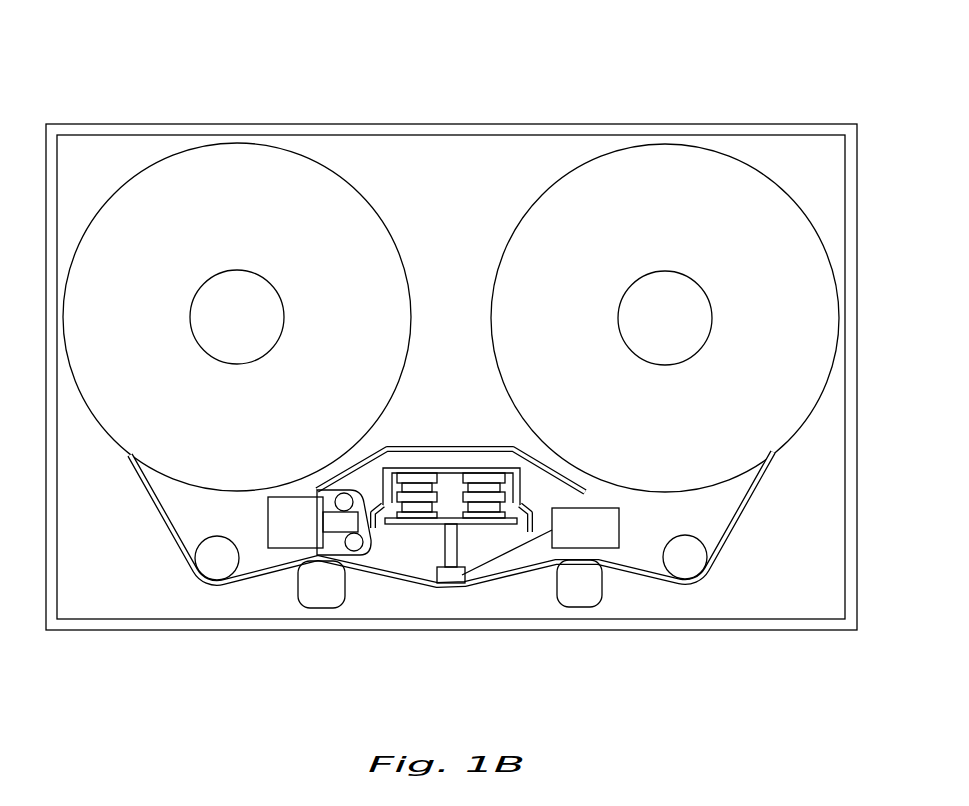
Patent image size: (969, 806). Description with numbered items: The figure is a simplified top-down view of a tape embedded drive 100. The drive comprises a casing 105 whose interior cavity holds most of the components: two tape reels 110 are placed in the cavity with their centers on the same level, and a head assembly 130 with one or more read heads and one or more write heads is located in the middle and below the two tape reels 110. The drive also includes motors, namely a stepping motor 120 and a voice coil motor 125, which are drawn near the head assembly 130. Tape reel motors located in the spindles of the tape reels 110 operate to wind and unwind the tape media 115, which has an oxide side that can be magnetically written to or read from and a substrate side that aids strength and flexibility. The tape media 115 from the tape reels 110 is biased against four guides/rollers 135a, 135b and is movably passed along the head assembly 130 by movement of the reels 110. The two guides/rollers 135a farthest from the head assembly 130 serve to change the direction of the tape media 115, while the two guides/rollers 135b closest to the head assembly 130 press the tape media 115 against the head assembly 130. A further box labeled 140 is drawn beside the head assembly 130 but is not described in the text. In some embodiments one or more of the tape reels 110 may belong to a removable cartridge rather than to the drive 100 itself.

The tape embedded drive 100 is at (138, 43).
The casing 105 is at (450, 123).
The tape reels 110 is at (352, 201).
The tape media 115 is at (160, 513).
The stepping motor 120 is at (268, 519).
The voice coil motor 125 is at (418, 527).
The head assembly 130 is at (448, 585).
The guides/rollers 135a is at (212, 562).
The guides/rollers 135b is at (323, 597).
The controller / sensor 140 is at (540, 541).